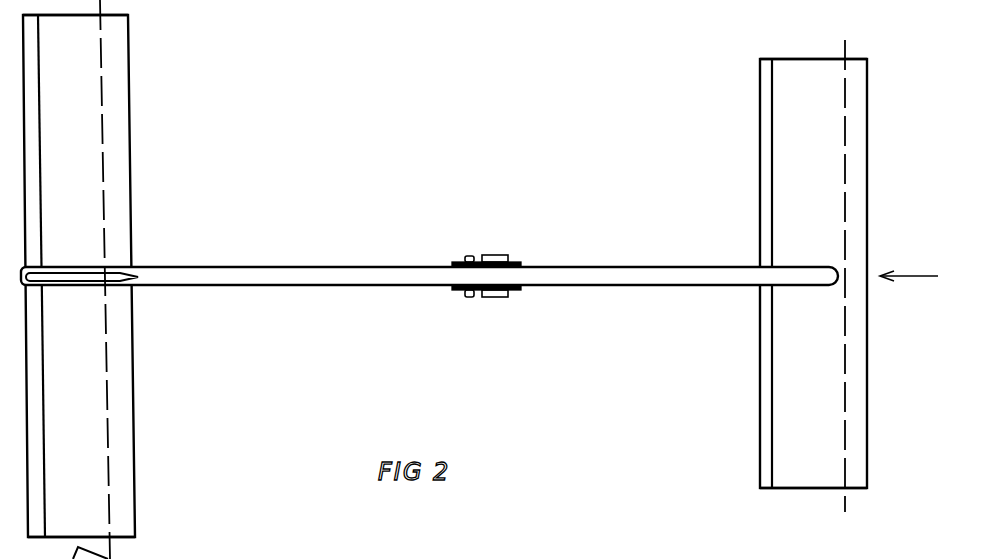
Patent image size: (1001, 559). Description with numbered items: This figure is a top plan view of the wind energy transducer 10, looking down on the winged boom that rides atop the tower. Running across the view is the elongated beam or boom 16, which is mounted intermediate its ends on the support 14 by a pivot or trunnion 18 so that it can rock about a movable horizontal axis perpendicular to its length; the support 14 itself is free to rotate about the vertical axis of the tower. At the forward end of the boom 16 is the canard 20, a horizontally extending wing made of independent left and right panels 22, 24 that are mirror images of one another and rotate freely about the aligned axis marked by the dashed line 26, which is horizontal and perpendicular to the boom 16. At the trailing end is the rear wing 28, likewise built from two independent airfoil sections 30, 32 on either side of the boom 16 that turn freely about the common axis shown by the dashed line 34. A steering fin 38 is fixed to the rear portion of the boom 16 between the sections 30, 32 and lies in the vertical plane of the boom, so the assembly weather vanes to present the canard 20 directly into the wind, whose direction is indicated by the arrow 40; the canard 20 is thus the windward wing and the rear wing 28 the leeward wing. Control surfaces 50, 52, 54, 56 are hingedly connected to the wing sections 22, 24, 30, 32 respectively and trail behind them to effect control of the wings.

The wind energy transducer 10 is at (482, 279).
The support 14 is at (454, 292).
The boom 16 is at (429, 253).
The pivot 18 is at (470, 292).
The canard 20 is at (827, 280).
The left panel 22 is at (790, 197).
The right panel 24 is at (788, 353).
The dashed line 26 is at (843, 477).
The rear wing 28 is at (129, 276).
The airfoil section 30 is at (78, 155).
The airfoil section 32 is at (83, 432).
The dashed line 34 is at (107, 330).
The steering fin 38 is at (118, 273).
The arrow 40 is at (912, 277).
The control surface 50 is at (765, 88).
The control surface 52 is at (765, 455).
The control surface 54 is at (30, 68).
The control surface 56 is at (35, 510).